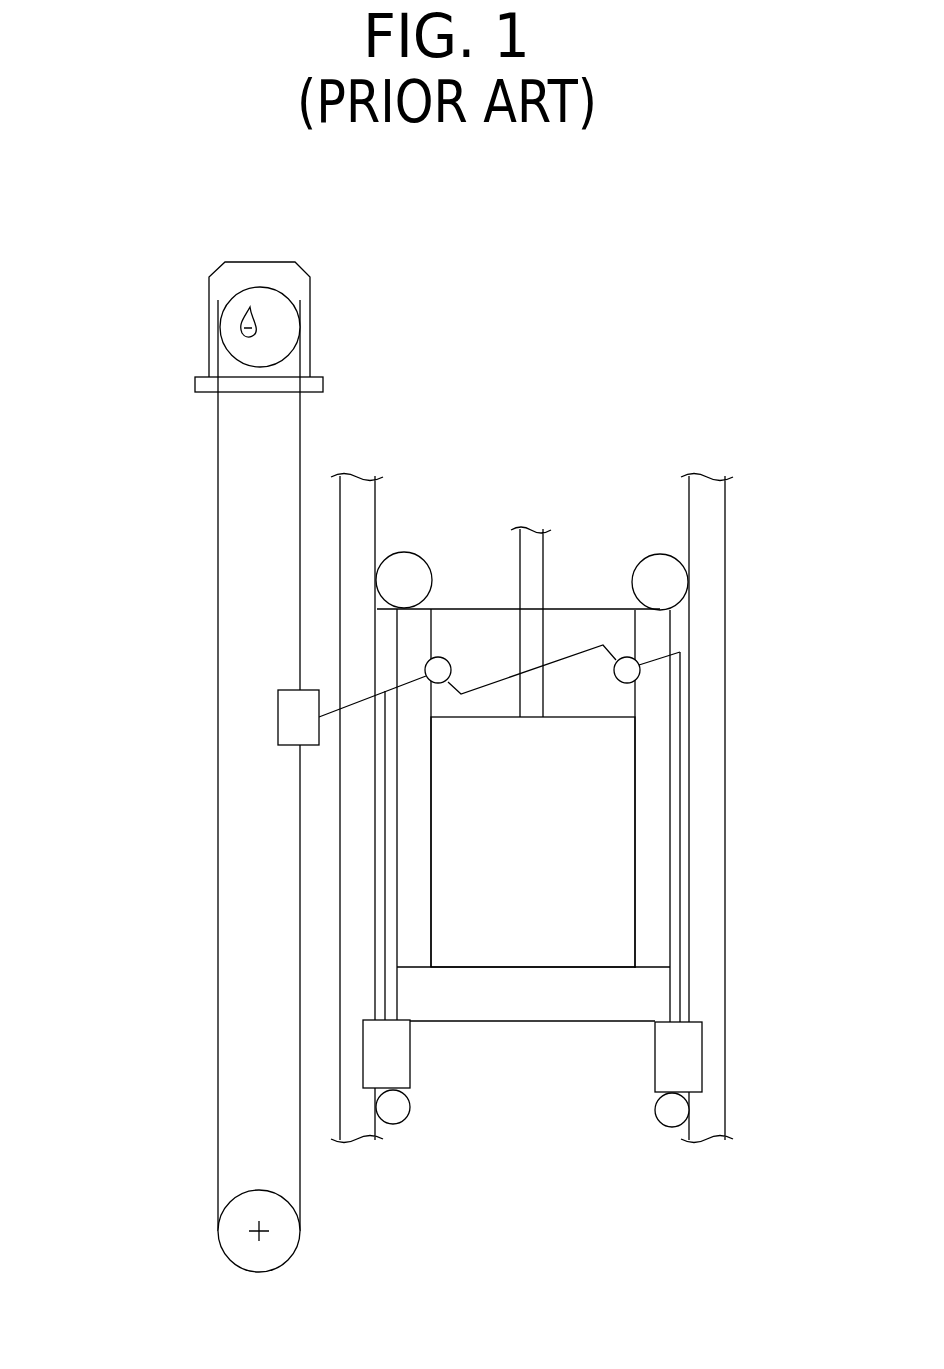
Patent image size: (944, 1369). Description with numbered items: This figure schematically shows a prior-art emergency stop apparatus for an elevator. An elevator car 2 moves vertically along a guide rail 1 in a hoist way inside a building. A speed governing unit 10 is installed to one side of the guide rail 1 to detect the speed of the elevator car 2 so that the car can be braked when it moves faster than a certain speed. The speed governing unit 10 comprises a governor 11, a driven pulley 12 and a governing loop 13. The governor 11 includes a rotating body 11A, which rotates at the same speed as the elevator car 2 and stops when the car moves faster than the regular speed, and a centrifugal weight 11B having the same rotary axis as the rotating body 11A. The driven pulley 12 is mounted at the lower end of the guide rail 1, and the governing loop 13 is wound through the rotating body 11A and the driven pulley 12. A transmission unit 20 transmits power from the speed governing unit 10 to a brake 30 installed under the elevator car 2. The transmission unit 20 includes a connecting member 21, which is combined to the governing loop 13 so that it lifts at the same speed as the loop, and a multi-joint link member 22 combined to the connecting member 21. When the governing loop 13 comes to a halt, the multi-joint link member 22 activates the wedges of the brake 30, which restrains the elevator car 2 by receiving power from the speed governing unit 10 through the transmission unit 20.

The guide rail 1 is at (370, 498).
The elevator car 2 is at (543, 850).
The speed governing unit 10 is at (199, 517).
The governor 11 is at (200, 335).
The rotating body 11A is at (283, 313).
The centrifugal weight 11B is at (250, 327).
The driven pulley 12 is at (237, 1220).
The governing loop 13 is at (217, 962).
The transmission unit 20 is at (457, 640).
The connecting member 21 is at (286, 713).
The multi-joint link member 22 is at (385, 857).
The brake 30 is at (424, 1064).